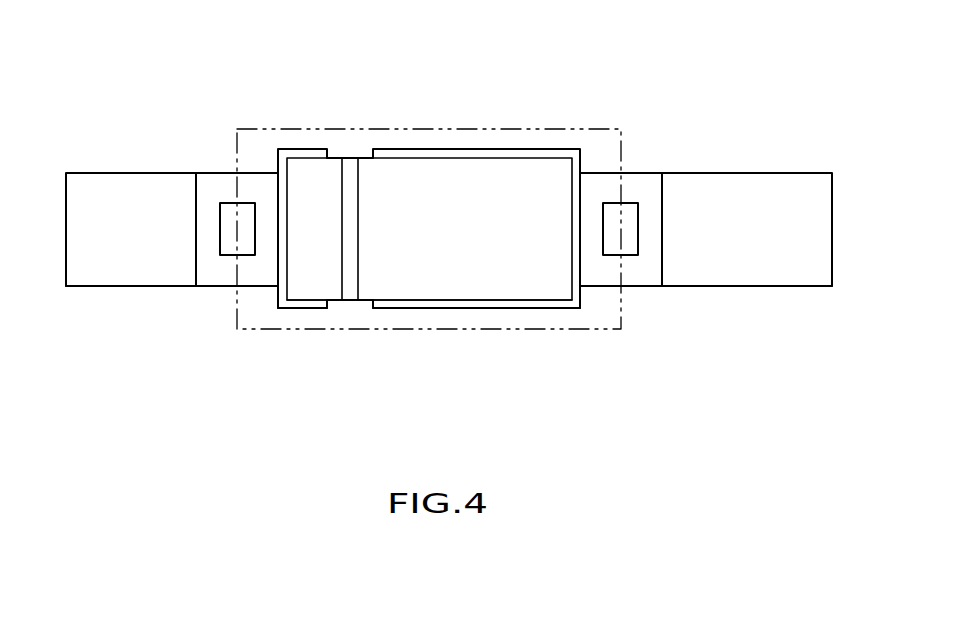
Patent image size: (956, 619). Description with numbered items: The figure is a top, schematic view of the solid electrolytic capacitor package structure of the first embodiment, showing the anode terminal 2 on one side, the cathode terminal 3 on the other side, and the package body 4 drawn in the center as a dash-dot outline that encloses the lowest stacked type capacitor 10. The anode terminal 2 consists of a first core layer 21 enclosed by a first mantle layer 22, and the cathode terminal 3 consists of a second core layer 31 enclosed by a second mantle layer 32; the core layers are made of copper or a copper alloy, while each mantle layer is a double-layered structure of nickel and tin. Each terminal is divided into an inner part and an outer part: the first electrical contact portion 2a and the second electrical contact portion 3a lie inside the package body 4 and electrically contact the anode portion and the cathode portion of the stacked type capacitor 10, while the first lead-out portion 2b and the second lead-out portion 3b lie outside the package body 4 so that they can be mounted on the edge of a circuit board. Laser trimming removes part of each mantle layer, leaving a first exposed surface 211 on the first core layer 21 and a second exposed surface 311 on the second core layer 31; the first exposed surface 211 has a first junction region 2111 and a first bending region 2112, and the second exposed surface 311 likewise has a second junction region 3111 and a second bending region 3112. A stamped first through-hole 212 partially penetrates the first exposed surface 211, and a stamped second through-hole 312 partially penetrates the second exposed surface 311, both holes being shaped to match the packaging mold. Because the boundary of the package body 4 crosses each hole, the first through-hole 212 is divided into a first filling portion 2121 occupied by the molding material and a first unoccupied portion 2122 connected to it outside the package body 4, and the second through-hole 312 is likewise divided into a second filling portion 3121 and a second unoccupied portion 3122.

The anode terminal 2 is at (151, 227).
The cathode terminal 3 is at (720, 230).
The package body 4 is at (474, 119).
The stacked type capacitor 10 is at (350, 149).
The first core layer 21 is at (157, 296).
The first mantle layer 22 is at (101, 268).
The first electrical contact portion 2a is at (310, 302).
The first lead-out portion 2b is at (112, 265).
The second electrical contact portion 3a is at (475, 302).
The second lead-out portion 3b is at (765, 262).
The second core layer 31 is at (721, 298).
The second mantle layer 32 is at (775, 267).
The first exposed surface 211 is at (219, 346).
The first through-hole 212 is at (219, 145).
The second exposed surface 311 is at (639, 348).
The second through-hole 312 is at (630, 146).
The first junction region 2111 is at (260, 273).
The first bending region 2112 is at (213, 273).
The first filling portion 2121 is at (243, 215).
The first unoccupied portion 2122 is at (228, 215).
The second junction region 3111 is at (597, 273).
The second bending region 3112 is at (644, 273).
The second filling portion 3121 is at (615, 215).
The second unoccupied portion 3122 is at (628, 215).